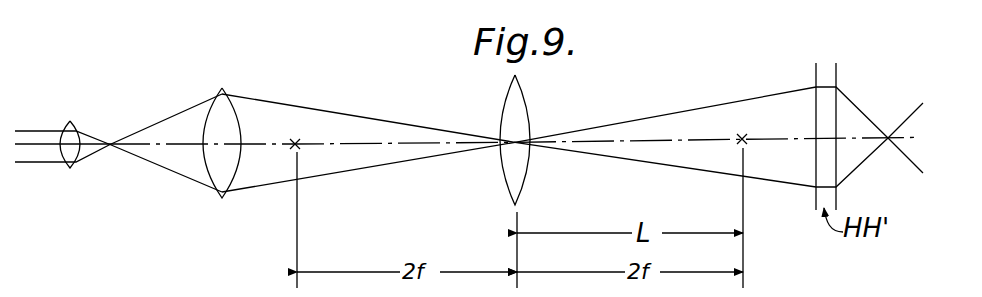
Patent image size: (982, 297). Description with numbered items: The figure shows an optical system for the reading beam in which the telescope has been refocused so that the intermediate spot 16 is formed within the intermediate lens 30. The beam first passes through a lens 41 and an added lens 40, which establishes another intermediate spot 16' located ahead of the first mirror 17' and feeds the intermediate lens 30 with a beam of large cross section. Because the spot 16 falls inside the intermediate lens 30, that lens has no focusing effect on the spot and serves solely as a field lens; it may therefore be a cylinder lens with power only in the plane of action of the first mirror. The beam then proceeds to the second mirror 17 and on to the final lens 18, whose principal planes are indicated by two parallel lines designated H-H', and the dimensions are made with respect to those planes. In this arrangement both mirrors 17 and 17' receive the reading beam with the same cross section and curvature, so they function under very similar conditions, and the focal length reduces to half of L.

The collimating lens 41 is at (72, 168).
The intermediate spot 16' is at (118, 143).
The lens 40 is at (213, 171).
The mirror 17' is at (319, 115).
The intermediate spot 16 is at (519, 139).
The intermediate lens 30 is at (522, 117).
The mirror 17 is at (752, 106).
The final lens 18 is at (831, 86).